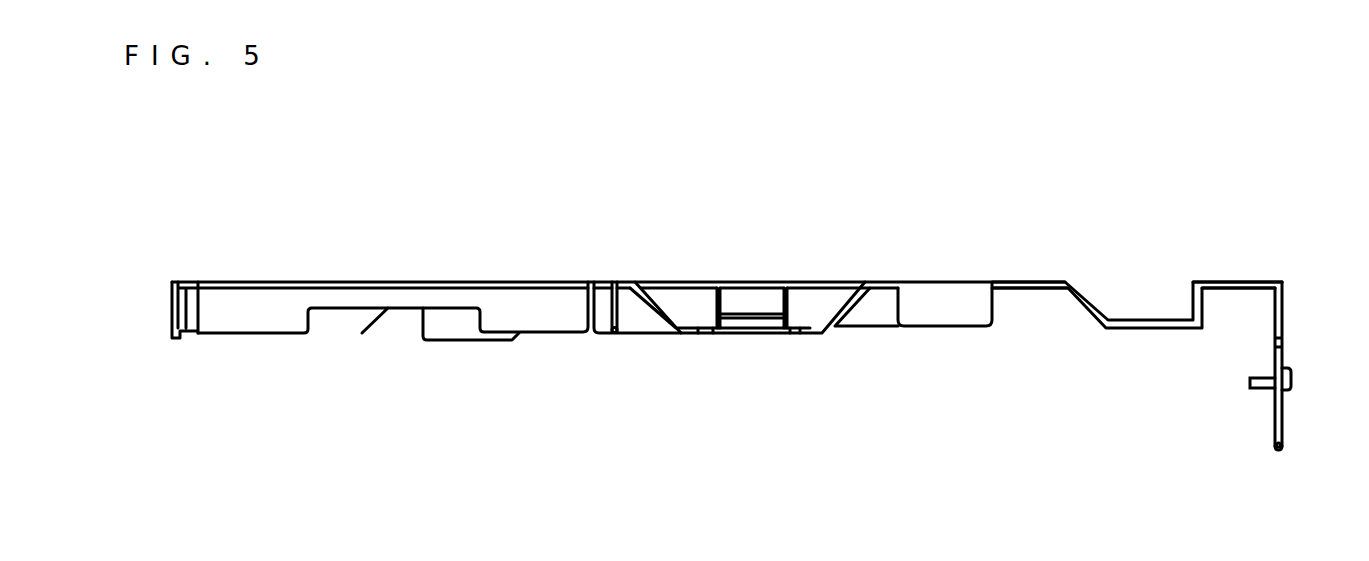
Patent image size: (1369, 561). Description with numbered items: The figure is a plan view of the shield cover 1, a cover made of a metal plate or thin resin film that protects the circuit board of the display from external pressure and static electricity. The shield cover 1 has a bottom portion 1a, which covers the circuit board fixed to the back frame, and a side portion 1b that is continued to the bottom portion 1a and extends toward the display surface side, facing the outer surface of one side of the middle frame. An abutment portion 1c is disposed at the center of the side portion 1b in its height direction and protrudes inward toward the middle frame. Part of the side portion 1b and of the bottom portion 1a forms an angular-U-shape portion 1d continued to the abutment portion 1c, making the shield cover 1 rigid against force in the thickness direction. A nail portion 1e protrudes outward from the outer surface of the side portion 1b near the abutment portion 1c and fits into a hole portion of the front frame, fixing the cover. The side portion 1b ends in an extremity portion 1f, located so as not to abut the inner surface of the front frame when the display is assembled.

The shield cover 1 is at (181, 195).
The bottom portion 1a is at (1022, 282).
The side portion 1b is at (1283, 309).
The abutment portion 1c is at (1263, 393).
The angular-U-shape portion 1d is at (1240, 282).
The nail portion 1e is at (1292, 379).
The extremity portion 1f is at (1278, 453).